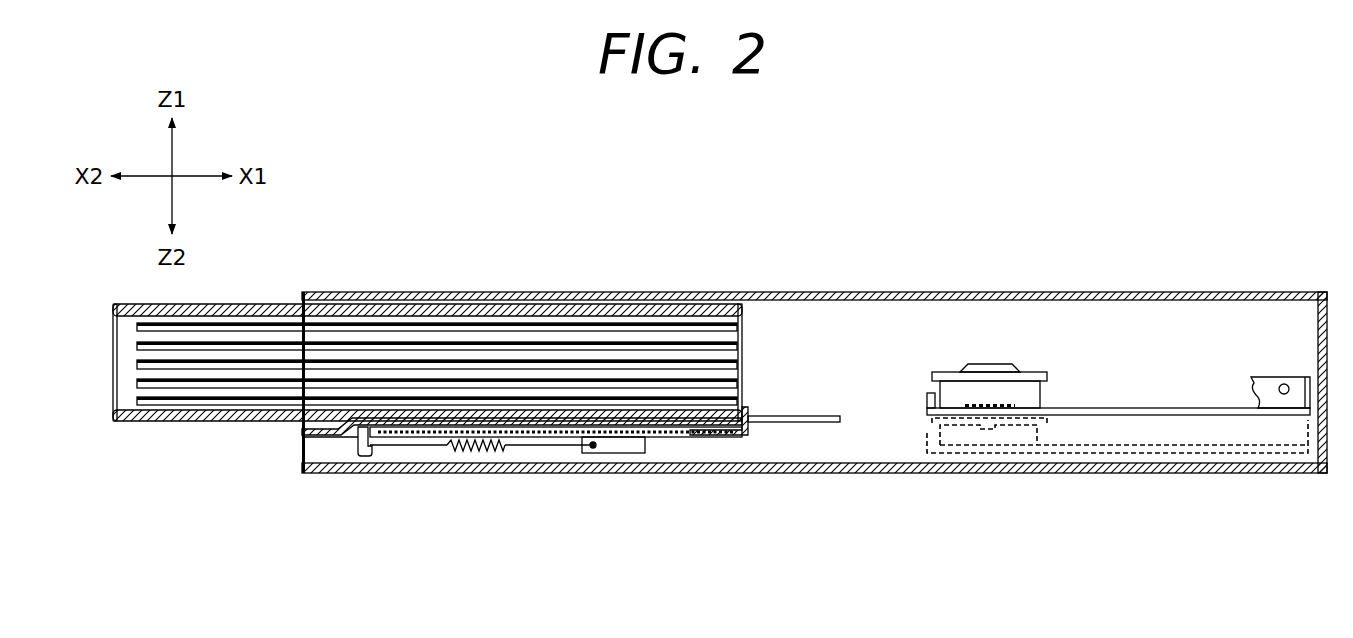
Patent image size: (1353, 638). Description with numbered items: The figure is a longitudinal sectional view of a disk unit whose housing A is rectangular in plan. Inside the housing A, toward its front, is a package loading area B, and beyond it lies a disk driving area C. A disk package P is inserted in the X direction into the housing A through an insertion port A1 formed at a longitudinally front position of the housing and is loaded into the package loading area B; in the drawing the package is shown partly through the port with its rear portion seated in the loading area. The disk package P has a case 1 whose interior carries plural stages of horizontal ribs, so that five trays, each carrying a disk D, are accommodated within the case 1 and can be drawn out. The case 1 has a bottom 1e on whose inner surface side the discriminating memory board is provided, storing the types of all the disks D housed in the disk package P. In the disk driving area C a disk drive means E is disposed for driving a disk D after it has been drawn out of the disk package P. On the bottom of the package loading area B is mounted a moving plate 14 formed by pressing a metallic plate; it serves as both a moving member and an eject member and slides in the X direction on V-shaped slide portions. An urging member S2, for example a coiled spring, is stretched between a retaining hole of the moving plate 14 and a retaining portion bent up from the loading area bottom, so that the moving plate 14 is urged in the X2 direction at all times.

The case 1 is at (113, 340).
The bottom 1e is at (162, 421).
The disk package P is at (265, 287).
The disk D is at (742, 327).
The housing A is at (1180, 292).
The insertion port A1 is at (290, 441).
The package loading area B is at (771, 319).
The disk driving area C is at (1137, 342).
The disk drive means E is at (1058, 398).
The moving plate 14 is at (386, 428).
The urging member S2 is at (481, 453).